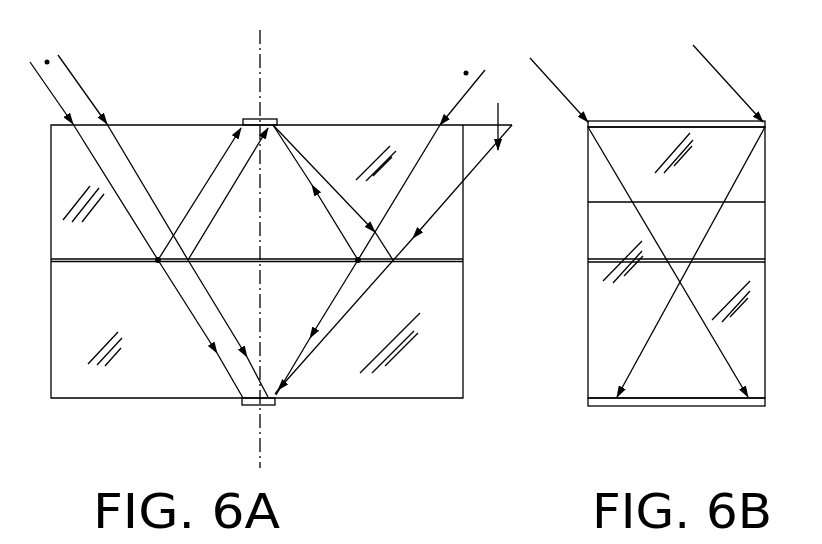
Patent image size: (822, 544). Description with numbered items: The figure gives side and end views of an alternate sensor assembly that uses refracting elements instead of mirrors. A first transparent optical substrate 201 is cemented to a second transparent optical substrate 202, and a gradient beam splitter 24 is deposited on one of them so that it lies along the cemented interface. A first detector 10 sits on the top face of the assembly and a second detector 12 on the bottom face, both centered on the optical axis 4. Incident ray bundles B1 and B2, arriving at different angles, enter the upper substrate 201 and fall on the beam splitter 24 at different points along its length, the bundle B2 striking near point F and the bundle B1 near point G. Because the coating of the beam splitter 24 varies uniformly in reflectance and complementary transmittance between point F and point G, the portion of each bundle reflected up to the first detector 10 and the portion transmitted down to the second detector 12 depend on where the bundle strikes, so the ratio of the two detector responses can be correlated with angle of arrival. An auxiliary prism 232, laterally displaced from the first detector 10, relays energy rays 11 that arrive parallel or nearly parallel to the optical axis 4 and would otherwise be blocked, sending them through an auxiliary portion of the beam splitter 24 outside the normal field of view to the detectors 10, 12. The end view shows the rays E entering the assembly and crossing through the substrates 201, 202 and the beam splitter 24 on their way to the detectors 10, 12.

In FIG. 6A, the optical axis 4 is at (260, 40).
In FIG. 6A, the first detector 10 is at (277, 121).
In FIG. 6B, the first detector 10 is at (766, 124).
In FIG. 6A, the energy rays 11 is at (54, 98).
In FIG. 6A, the second detector 12 is at (242, 402).
In FIG. 6B, the second detector 12 is at (645, 404).
In FIG. 6A, the gradient beam splitter 24 is at (440, 258).
In FIG. 6B, the gradient beam splitter 24 is at (598, 262).
In FIG. 6A, the first transparent optical substrate 201 is at (365, 132).
In FIG. 6B, the first transparent optical substrate 201 is at (698, 108).
In FIG. 6A, the second transparent optical substrate 202 is at (413, 392).
In FIG. 6B, the second transparent optical substrate 202 is at (682, 387).
In FIG. 6A, the auxiliary prism 232 is at (480, 184).
In FIG. 6B, the auxiliary prism 232 is at (598, 201).
In FIG. 6A, the ray bundle B1 is at (460, 60).
In FIG. 6A, the ray bundle B2 is at (47, 59).
In FIG. 6B, the rays E is at (560, 90).
In FIG. 6A, the point F is at (156, 263).
In FIG. 6A, the point G is at (355, 262).